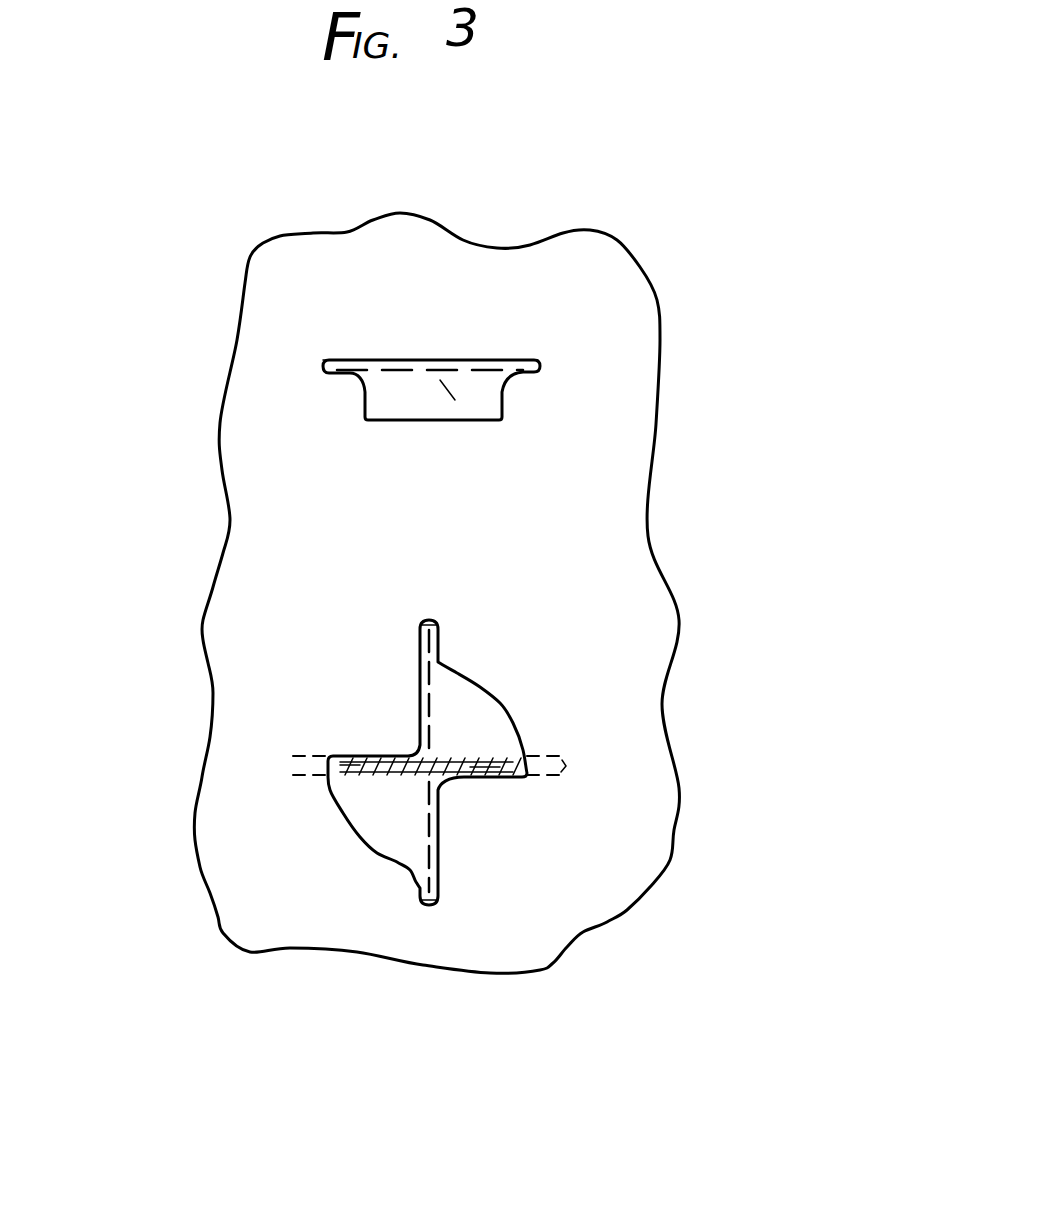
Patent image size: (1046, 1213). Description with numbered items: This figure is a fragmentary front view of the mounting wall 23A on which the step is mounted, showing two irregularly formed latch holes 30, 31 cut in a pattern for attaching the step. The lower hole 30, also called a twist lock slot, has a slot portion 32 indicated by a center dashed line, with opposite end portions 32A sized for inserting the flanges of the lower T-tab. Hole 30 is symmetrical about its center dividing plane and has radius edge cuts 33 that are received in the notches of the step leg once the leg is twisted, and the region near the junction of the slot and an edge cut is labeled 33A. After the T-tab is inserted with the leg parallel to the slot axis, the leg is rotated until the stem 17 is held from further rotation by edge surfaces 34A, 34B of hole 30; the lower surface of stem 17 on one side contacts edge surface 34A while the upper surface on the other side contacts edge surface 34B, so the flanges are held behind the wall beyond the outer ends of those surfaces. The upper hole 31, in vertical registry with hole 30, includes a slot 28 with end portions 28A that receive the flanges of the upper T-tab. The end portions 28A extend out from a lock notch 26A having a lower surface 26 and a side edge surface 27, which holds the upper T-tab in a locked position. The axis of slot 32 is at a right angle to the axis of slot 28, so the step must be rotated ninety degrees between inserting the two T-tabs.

The stem 17 is at (484, 770).
The mounting wall 23A is at (724, 509).
The lower surface 26 is at (423, 420).
The lock notch 26A is at (447, 407).
The side edge surface 27 is at (502, 404).
The slot 28 is at (397, 367).
The end portions 28A is at (343, 360).
The latch hole 30 is at (400, 828).
The upper hole 31 is at (353, 380).
The slot portion 32 is at (430, 702).
The end portions 32A is at (420, 642).
The radius edge cuts 33 is at (510, 707).
The lobe junction 33A is at (423, 745).
The edge surface 34A is at (471, 764).
The edge surface 34B is at (365, 767).